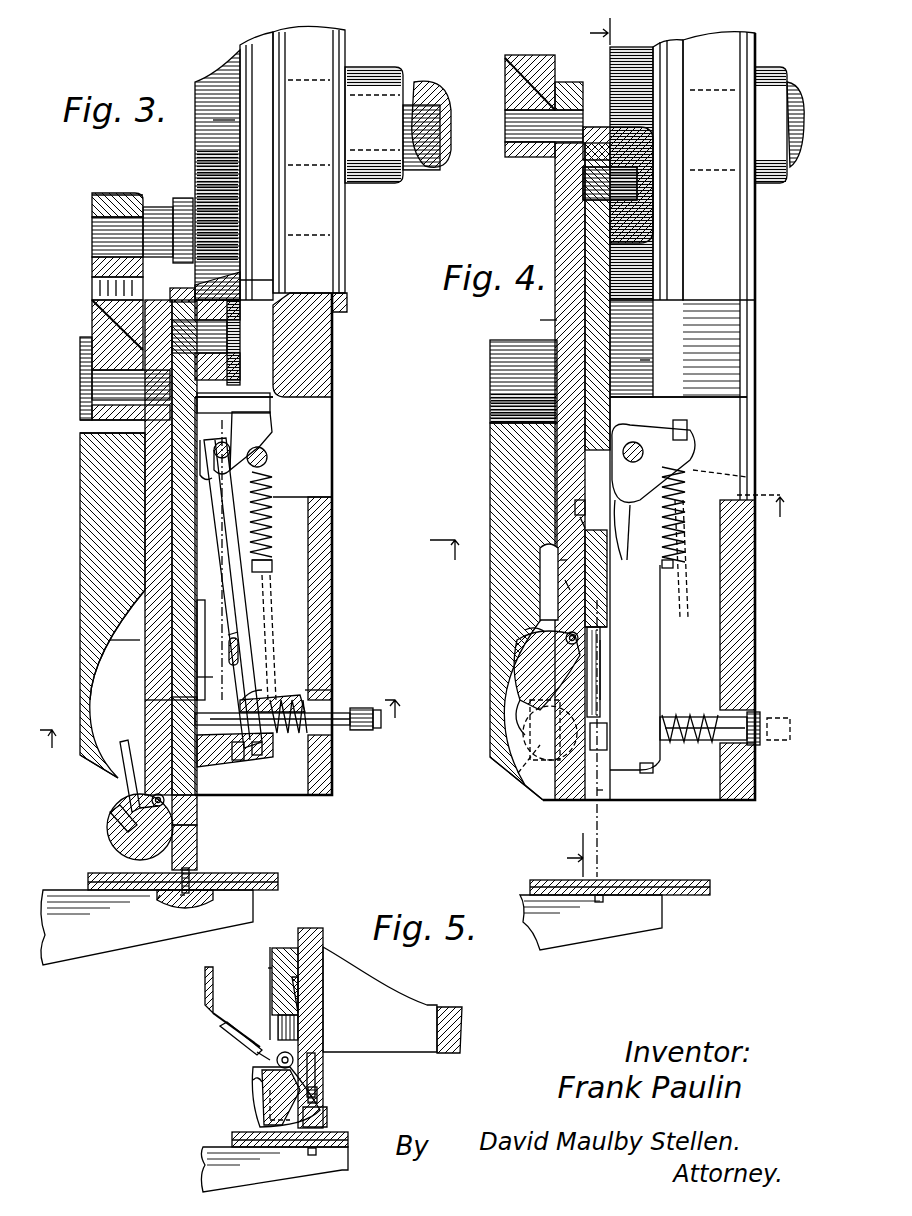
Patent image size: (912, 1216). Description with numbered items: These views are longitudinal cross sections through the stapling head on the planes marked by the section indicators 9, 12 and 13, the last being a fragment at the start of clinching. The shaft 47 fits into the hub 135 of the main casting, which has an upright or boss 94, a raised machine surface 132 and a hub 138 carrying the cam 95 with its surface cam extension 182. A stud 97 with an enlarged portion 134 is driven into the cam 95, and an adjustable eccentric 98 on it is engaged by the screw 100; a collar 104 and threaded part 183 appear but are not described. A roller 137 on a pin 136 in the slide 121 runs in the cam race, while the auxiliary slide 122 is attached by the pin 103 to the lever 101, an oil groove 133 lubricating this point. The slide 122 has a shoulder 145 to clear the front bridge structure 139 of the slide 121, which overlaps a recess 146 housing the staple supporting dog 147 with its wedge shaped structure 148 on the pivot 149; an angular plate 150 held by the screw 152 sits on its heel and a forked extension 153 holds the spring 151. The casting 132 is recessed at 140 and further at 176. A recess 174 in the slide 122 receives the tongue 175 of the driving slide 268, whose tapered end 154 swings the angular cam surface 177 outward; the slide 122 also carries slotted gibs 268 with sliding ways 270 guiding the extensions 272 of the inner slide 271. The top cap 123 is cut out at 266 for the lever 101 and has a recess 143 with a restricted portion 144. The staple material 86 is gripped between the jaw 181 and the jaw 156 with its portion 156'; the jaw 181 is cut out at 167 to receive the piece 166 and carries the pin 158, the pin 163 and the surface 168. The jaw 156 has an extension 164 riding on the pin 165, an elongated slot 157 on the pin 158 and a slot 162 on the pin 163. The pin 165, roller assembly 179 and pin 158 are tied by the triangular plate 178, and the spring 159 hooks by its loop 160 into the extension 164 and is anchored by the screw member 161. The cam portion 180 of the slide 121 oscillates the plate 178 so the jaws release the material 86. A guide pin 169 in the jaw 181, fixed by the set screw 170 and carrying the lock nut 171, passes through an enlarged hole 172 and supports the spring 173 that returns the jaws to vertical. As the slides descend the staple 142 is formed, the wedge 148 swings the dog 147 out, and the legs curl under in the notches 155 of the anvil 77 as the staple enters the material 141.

In FIG. 4, the section line 9 is at (584, 443).
In FIG. 4, the section line 12 is at (617, 531).
In FIG. 3, the section line 13 is at (227, 732).
In FIG. 3, the shaft 47 is at (430, 95).
In FIG. 4, the shaft 47 is at (792, 108).
In FIG. 3, the anvil 77 is at (253, 912).
In FIG. 4, the anvil 77 is at (665, 917).
In FIG. 5, the anvil 77 is at (205, 1173).
In FIG. 3, the staple material 86 is at (240, 765).
In FIG. 4, the staple material 86 is at (623, 727).
In FIG. 3, the boss or pad 94 is at (320, 208).
In FIG. 4, the boss or pad 94 is at (727, 233).
In FIG. 3, the cam 95 is at (205, 85).
In FIG. 4, the cam 95 is at (645, 290).
In FIG. 3, the stud 97 is at (103, 233).
In FIG. 3, the adjustable eccentric 98 is at (95, 205).
In FIG. 3, the screw 100 is at (95, 294).
In FIG. 3, the lever 101 is at (118, 190).
In FIG. 4, the lever 101 is at (540, 158).
In FIG. 3, the pin 103 is at (110, 385).
In FIG. 4, the pin 103 is at (523, 126).
In FIG. 3, the collar 104 is at (155, 213).
In FIG. 3, the slide 121 is at (178, 296).
In FIG. 4, the slide 121 is at (590, 210).
In FIG. 3, the auxiliary slide 122 is at (140, 432).
In FIG. 4, the auxiliary slide 122 is at (562, 216).
In FIG. 5, the auxiliary slide 122 is at (281, 953).
In FIG. 3, the top cap 123 is at (78, 500).
In FIG. 4, the top cap 123 is at (498, 448).
In FIG. 3, the casting 132 is at (338, 302).
In FIG. 4, the casting 132 is at (757, 260).
In FIG. 5, the casting 132 is at (462, 1031).
In FIG. 3, the oil groove 133 is at (93, 352).
In FIG. 4, the oil groove 133 is at (512, 99).
In FIG. 3, the enlarged portion 134 is at (183, 197).
In FIG. 3, the hub 135 is at (375, 75).
In FIG. 4, the hub 135 is at (768, 72).
In FIG. 3, the pin 136 is at (212, 335).
In FIG. 4, the pin 136 is at (610, 183).
In FIG. 3, the roller 137 is at (255, 294).
In FIG. 4, the roller 137 is at (640, 128).
In FIG. 3, the hub 138 is at (258, 60).
In FIG. 4, the hub 138 is at (668, 60).
In FIG. 3, the front bridge structure 139 is at (150, 722).
In FIG. 5, the front bridge structure 139 is at (270, 968).
In FIG. 3, the recess 140 is at (305, 440).
In FIG. 4, the recess 140 is at (745, 464).
In FIG. 3, the material 141 is at (280, 884).
In FIG. 4, the material 141 is at (710, 891).
In FIG. 5, the material 141 is at (232, 1145).
In FIG. 3, the staple 142 is at (175, 912).
In FIG. 4, the staple 142 is at (597, 800).
In FIG. 3, the recess 143 is at (127, 767).
In FIG. 4, the recess 143 is at (497, 773).
In FIG. 5, the recess 143 is at (212, 1006).
In FIG. 3, the restricted portion 144 is at (133, 567).
In FIG. 4, the restricted portion 144 is at (540, 567).
In FIG. 3, the shoulder portion 145 is at (127, 652).
In FIG. 4, the shoulder portion 145 is at (552, 310).
In FIG. 3, the recess 146 is at (195, 845).
In FIG. 4, the recess 146 is at (550, 593).
In FIG. 3, the staple supporting dog 147 is at (123, 853).
In FIG. 4, the staple supporting dog 147 is at (527, 697).
In FIG. 5, the staple supporting dog 147 is at (252, 1118).
In FIG. 3, the wedge shaped structure 148 is at (157, 895).
In FIG. 4, the wedge shaped structure 148 is at (533, 763).
In FIG. 5, the wedge shaped structure 148 is at (327, 1123).
In FIG. 3, the pivot 149 is at (167, 797).
In FIG. 4, the pivot 149 is at (572, 638).
In FIG. 5, the pivot 149 is at (317, 1057).
In FIG. 3, the angularly shaped plate 150 is at (133, 797).
In FIG. 4, the angularly shaped plate 150 is at (567, 580).
In FIG. 5, the angularly shaped plate 150 is at (232, 1037).
In FIG. 3, the spring 151 is at (167, 810).
In FIG. 5, the spring 151 is at (260, 1057).
In FIG. 3, the screw 152 is at (113, 820).
In FIG. 4, the screw 152 is at (530, 628).
In FIG. 5, the screw 152 is at (257, 1083).
In FIG. 3, the forked extension 153 is at (200, 822).
In FIG. 3, the tapered portion 154 is at (197, 868).
In FIG. 4, the tapered portion 154 is at (608, 621).
In FIG. 5, the tapered portion 154 is at (320, 1093).
In FIG. 3, the notches 155 is at (183, 912).
In FIG. 4, the notches 155 is at (600, 903).
In FIG. 5, the notches 155 is at (320, 1168).
In FIG. 3, the jaw 156 is at (232, 584).
In FIG. 3, the lever end 156' is at (280, 690).
In FIG. 3, the elongated slot 157 is at (202, 436).
In FIG. 3, the pin 158 is at (224, 440).
In FIG. 4, the pin 158 is at (637, 440).
In FIG. 3, the spring 159 is at (270, 505).
In FIG. 4, the spring 159 is at (686, 496).
In FIG. 3, the loop 160 is at (237, 402).
In FIG. 3, the screw member 161 is at (268, 569).
In FIG. 4, the screw member 161 is at (674, 565).
In FIG. 3, the slot 162 is at (240, 655).
In FIG. 3, the pin 163 is at (234, 645).
In FIG. 3, the extension 164 is at (268, 445).
In FIG. 4, the extension 164 is at (690, 433).
In FIG. 3, the pin structure 165 is at (267, 457).
In FIG. 4, the pin structure 165 is at (747, 478).
In FIG. 3, the piece 166 is at (260, 562).
In FIG. 3, the notch 167 is at (317, 684).
In FIG. 3, the surface 168 is at (255, 687).
In FIG. 3, the guide pin structure 169 is at (340, 722).
In FIG. 4, the guide pin structure 169 is at (783, 748).
In FIG. 3, the set screw 170 is at (262, 762).
In FIG. 4, the set screw 170 is at (647, 775).
In FIG. 3, the lock nut 171 is at (360, 728).
In FIG. 3, the enlarged hole 172 is at (325, 727).
In FIG. 4, the enlarged hole 172 is at (749, 712).
In FIG. 3, the spring 173 is at (317, 700).
In FIG. 4, the spring 173 is at (707, 757).
In FIG. 4, the recess 174 is at (580, 518).
In FIG. 5, the recess 174 is at (290, 993).
In FIG. 3, the tongue portion 175 is at (203, 750).
In FIG. 4, the tongue portion 175 is at (580, 507).
In FIG. 5, the tongue portion 175 is at (293, 995).
In FIG. 3, the recess 176 is at (297, 790).
In FIG. 5, the recess 176 is at (407, 1043).
In FIG. 3, the angular cam surface 177 is at (197, 700).
In FIG. 4, the angular cam surface 177 is at (580, 672).
In FIG. 4, the triangularly shaped plate 178 is at (693, 444).
In FIG. 4, the roller assembly 179 is at (633, 517).
In FIG. 4, the cam portion 180 is at (620, 535).
In FIG. 3, the jaw 181 is at (266, 598).
In FIG. 4, the jaw 181 is at (673, 622).
In FIG. 3, the surface cam extension 182 is at (213, 120).
In FIG. 4, the surface cam extension 182 is at (640, 368).
In FIG. 3, the thread 183 is at (234, 358).
In FIG. 3, the arcuate cut out 266 is at (85, 340).
In FIG. 4, the arcuate cut out 266 is at (507, 353).
In FIG. 3, the driving slide 268 is at (180, 735).
In FIG. 4, the driving slide 268 is at (613, 583).
In FIG. 5, the driving slide 268 is at (318, 930).
In FIG. 3, the sliding ways 270 is at (203, 700).
In FIG. 4, the sliding ways 270 is at (592, 662).
In FIG. 3, the inner slide member 271 is at (213, 675).
In FIG. 4, the inner slide member 271 is at (600, 678).
In FIG. 5, the extensions 272 is at (312, 1073).